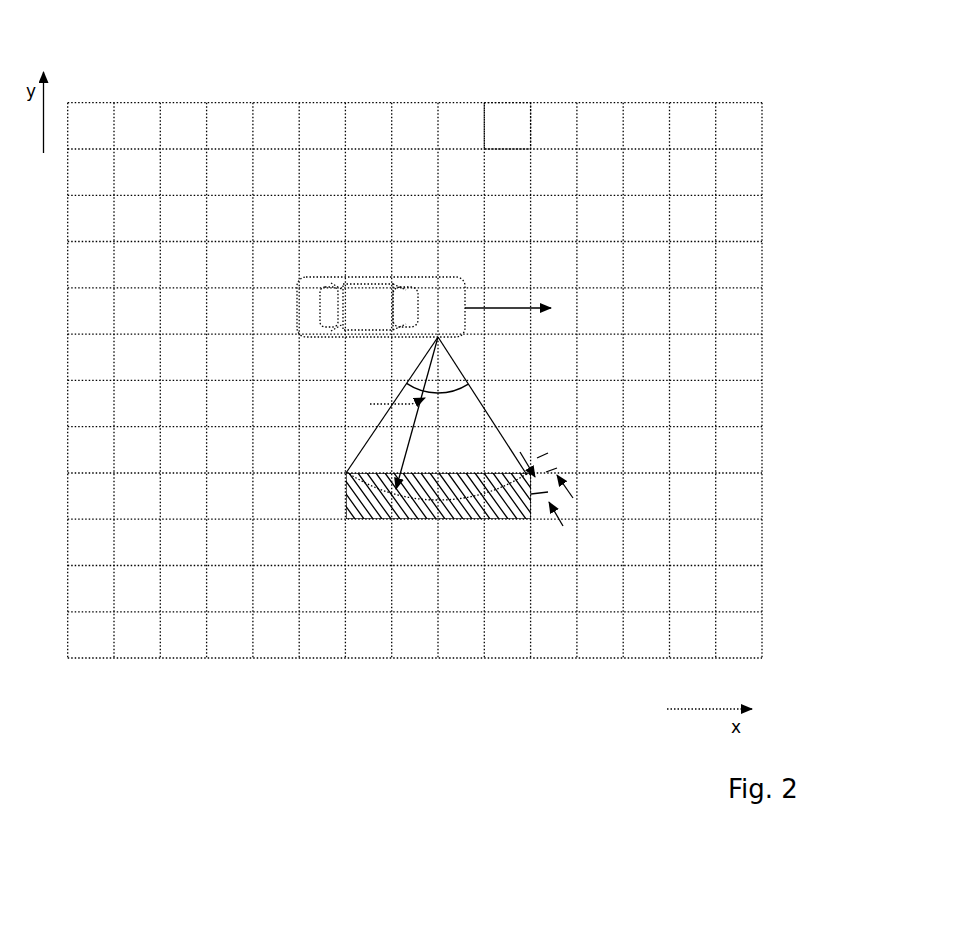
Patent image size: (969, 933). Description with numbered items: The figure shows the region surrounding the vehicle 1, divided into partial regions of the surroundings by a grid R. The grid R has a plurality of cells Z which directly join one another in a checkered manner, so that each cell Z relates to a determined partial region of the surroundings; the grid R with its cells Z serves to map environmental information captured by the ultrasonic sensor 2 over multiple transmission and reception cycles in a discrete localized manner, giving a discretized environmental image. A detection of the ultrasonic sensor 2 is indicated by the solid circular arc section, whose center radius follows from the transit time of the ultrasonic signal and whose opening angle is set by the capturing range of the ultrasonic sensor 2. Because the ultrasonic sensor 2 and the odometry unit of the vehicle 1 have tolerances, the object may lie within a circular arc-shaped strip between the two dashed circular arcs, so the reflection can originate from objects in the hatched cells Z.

The vehicle 1 is at (294, 292).
The ultrasonic sensor 2 is at (459, 345).
The cell Z is at (513, 115).
The grid R is at (673, 80).